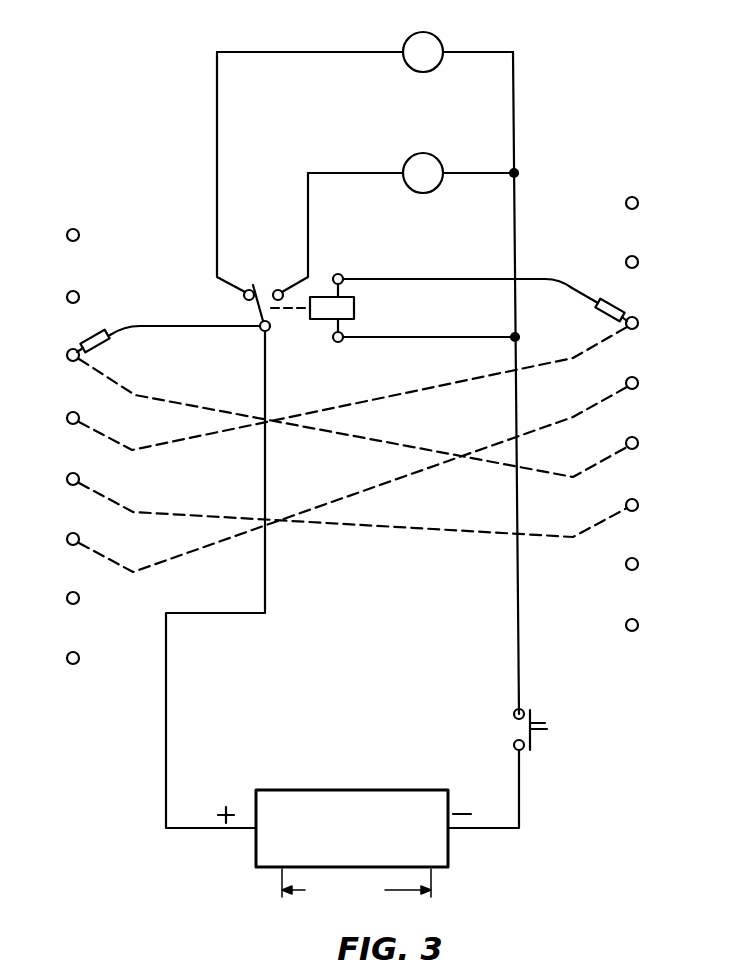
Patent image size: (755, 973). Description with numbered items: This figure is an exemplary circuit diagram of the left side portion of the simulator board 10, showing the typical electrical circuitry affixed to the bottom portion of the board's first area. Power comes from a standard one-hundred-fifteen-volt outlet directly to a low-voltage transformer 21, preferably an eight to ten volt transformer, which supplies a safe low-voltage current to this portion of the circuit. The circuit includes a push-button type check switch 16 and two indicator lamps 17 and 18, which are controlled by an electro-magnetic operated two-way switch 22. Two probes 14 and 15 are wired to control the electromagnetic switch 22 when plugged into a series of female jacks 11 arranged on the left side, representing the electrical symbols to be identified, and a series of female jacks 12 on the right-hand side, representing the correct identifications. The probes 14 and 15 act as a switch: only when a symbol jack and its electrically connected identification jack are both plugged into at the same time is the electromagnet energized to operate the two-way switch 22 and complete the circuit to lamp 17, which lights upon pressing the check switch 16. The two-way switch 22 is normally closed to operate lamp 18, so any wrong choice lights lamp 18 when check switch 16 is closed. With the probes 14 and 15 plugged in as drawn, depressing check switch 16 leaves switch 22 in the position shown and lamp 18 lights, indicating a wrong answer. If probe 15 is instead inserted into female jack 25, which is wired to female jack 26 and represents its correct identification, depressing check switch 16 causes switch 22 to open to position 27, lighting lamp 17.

The control circuit 10 is at (259, 440).
The female jacks 11 is at (73, 242).
The female jacks 12 is at (628, 209).
The probe 14 is at (86, 343).
The probe 15 is at (615, 303).
The check switch 16 is at (534, 720).
The indicator lamp 17 is at (437, 158).
The indicator lamp 18 is at (438, 40).
The low-voltage transformer 21 is at (345, 796).
The electro-magnetic operated two-way switch 22 is at (312, 296).
The female jack 25 is at (640, 439).
The female jack 26 is at (68, 359).
The switch position 27 is at (277, 289).